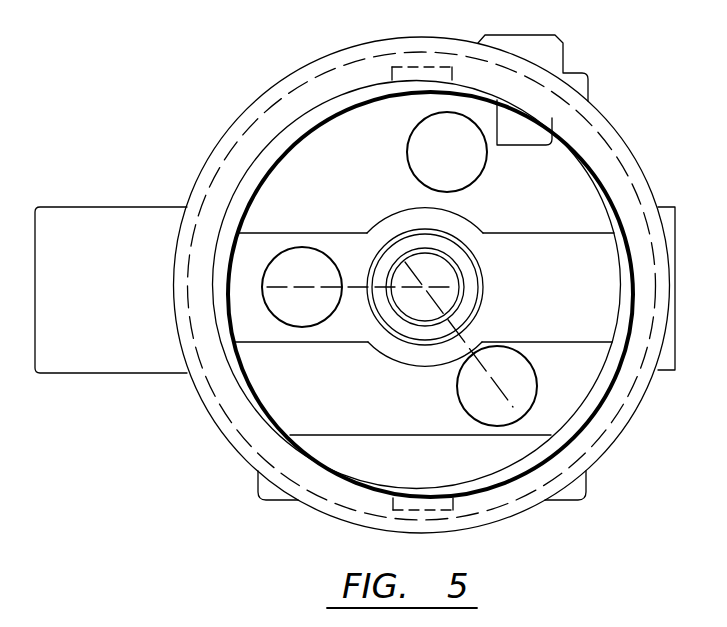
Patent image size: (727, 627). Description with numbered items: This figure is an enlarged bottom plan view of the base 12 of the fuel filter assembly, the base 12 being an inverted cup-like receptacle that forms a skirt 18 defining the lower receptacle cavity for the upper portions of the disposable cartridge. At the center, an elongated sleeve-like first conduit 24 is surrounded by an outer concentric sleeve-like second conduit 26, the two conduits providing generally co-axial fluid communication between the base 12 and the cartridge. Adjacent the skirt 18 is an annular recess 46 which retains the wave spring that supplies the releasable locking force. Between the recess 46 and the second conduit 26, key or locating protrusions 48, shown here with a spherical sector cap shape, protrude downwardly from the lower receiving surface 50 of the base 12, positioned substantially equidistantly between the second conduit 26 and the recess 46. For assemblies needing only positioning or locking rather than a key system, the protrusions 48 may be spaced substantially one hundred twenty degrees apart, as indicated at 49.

The base 12 is at (200, 129).
The skirt 18 is at (650, 181).
The first conduit 24 is at (462, 269).
The second conduit 26 is at (482, 294).
The annular recess 46 is at (588, 170).
The protrusion 48 is at (412, 140).
The protrusion spacing 49 is at (485, 391).
The lower receiving surface 50 is at (318, 217).